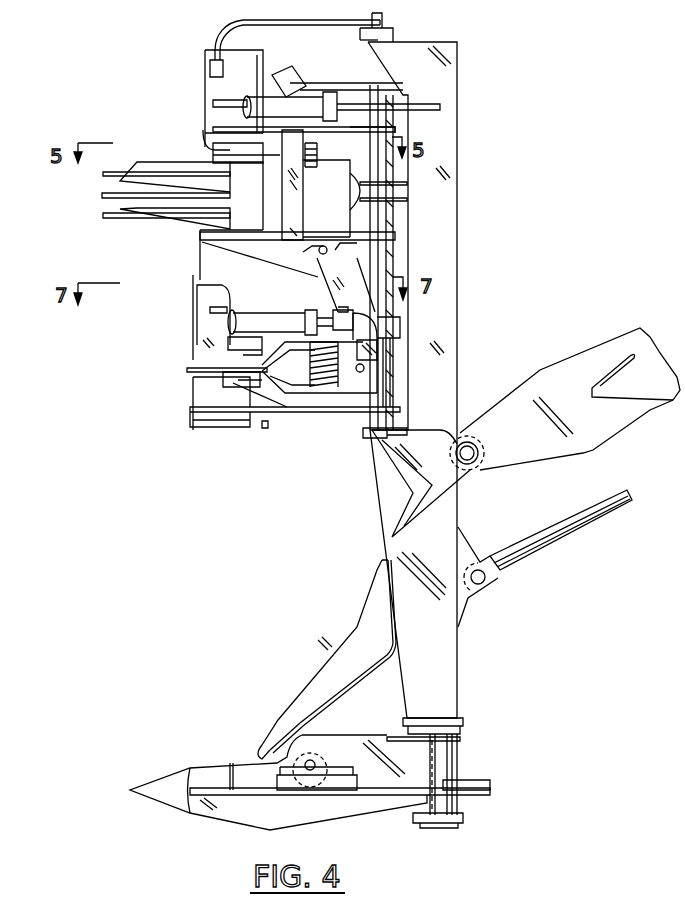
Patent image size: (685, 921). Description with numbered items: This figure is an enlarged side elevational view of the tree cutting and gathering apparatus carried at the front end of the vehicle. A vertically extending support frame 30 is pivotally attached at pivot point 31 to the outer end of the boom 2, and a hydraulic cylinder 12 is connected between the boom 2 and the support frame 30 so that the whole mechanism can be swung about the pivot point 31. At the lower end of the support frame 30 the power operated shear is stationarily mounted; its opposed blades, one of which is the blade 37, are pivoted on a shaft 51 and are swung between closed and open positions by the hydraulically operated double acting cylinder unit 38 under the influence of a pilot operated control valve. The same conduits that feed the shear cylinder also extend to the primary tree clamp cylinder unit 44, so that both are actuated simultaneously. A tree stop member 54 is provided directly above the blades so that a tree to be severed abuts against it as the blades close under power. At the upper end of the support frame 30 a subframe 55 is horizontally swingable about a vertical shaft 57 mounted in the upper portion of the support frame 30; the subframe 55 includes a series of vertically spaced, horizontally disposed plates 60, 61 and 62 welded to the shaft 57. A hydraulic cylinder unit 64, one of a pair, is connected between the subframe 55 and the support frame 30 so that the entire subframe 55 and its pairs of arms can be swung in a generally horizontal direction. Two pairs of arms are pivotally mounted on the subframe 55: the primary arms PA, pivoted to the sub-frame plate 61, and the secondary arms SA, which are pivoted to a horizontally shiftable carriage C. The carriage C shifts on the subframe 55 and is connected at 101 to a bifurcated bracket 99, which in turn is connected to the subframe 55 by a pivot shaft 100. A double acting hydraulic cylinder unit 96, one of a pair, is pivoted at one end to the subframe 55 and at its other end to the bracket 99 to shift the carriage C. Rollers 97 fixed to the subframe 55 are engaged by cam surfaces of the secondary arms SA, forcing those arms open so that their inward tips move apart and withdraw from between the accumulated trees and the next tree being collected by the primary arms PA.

The boom 2 is at (609, 347).
The hydraulic cylinder 12 is at (565, 527).
The support frame 30 is at (458, 668).
The pivot point 31 is at (468, 465).
The blade 37 is at (247, 800).
The double acting cylinder unit 38 is at (327, 780).
The primary tree clamp cylinder unit 44 is at (330, 178).
The shaft 51 is at (450, 763).
The tree stop member 54 is at (292, 712).
The subframe 55 is at (263, 426).
The vertical shaft 57 is at (388, 260).
The plate 60 is at (333, 412).
The sub-frame plate 61 is at (395, 236).
The plate 62 is at (395, 130).
The hydraulic cylinder unit 64 is at (277, 104).
The double acting hydraulic cylinder unit 96 is at (248, 317).
The roller 97 is at (262, 398).
The bifurcated bracket 99 is at (325, 283).
The pivot shaft 100 is at (318, 253).
The connection 101 is at (365, 369).
The carriage C is at (372, 352).
The primary arms PA is at (98, 196).
The secondary arms SA is at (177, 371).